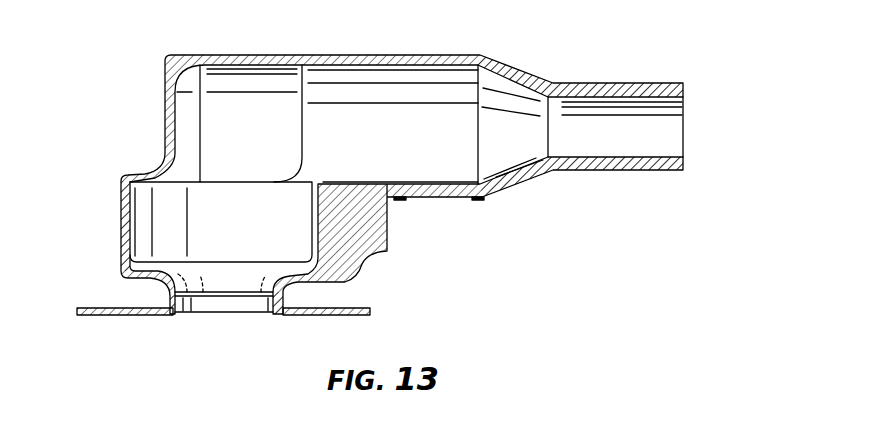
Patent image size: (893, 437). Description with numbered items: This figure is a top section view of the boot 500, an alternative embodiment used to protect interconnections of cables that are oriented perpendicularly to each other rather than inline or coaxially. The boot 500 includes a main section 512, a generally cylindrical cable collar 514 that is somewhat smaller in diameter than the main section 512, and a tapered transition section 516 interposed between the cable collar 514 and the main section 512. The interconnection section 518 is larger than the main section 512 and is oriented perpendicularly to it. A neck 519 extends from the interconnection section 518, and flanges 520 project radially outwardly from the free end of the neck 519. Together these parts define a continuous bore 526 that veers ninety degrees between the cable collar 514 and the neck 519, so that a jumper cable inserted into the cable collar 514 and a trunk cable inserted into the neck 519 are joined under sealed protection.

The boot 500 is at (703, 126).
The main section 512 is at (333, 56).
The cable collar 514 is at (646, 92).
The tapered transition section 516 is at (518, 75).
The interconnection section 518 is at (122, 245).
The neck 519 is at (170, 300).
The flanges 520 is at (107, 318).
The bore 526 is at (628, 134).